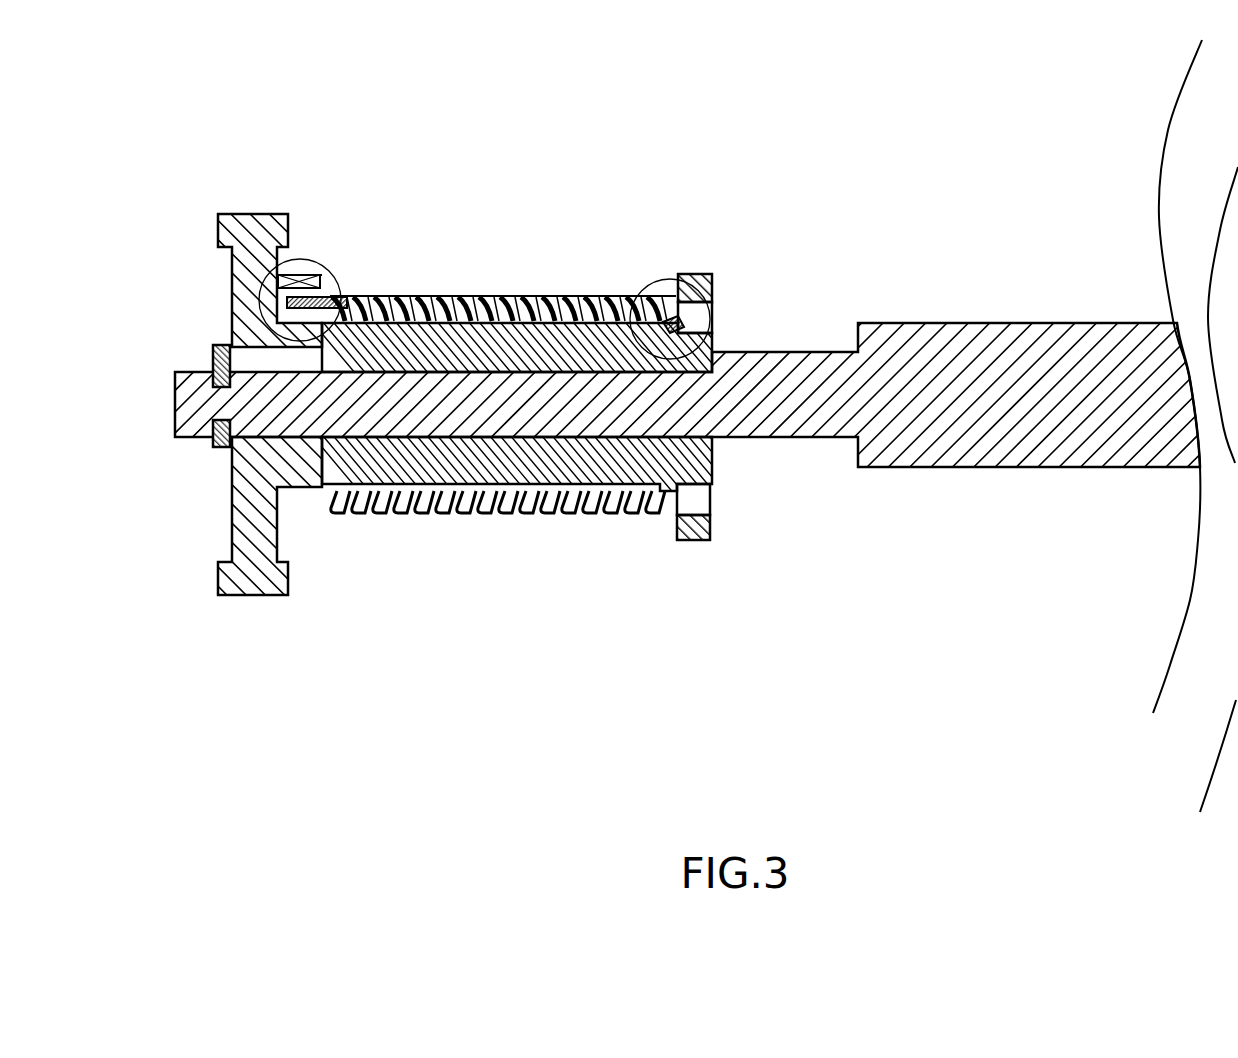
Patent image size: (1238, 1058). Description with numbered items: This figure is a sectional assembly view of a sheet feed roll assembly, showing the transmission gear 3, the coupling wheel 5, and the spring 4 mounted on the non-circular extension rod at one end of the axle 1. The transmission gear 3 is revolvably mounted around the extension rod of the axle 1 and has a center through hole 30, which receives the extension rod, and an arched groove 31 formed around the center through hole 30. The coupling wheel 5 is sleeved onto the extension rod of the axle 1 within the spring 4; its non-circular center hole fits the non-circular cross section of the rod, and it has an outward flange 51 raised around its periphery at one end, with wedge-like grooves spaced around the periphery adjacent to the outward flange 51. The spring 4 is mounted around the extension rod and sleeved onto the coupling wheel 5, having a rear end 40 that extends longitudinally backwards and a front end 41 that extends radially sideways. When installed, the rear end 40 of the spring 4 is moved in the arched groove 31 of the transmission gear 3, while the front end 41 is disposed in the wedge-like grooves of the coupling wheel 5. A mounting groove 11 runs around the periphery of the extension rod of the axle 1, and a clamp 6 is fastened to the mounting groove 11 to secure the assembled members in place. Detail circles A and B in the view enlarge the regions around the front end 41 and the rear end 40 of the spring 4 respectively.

The axle 1 is at (797, 380).
The transmission gear 3 is at (250, 233).
The center through hole 30 is at (275, 360).
The arched groove 31 is at (307, 270).
The spring 4 is at (468, 297).
The rear end 40 is at (327, 297).
The coupling wheel 5 is at (597, 348).
The front end 41 is at (673, 317).
The outward flange 51 is at (692, 532).
The clamp 6 is at (211, 346).
The mounting groove 11 is at (218, 393).
The detail A is at (703, 273).
The detail B is at (303, 260).